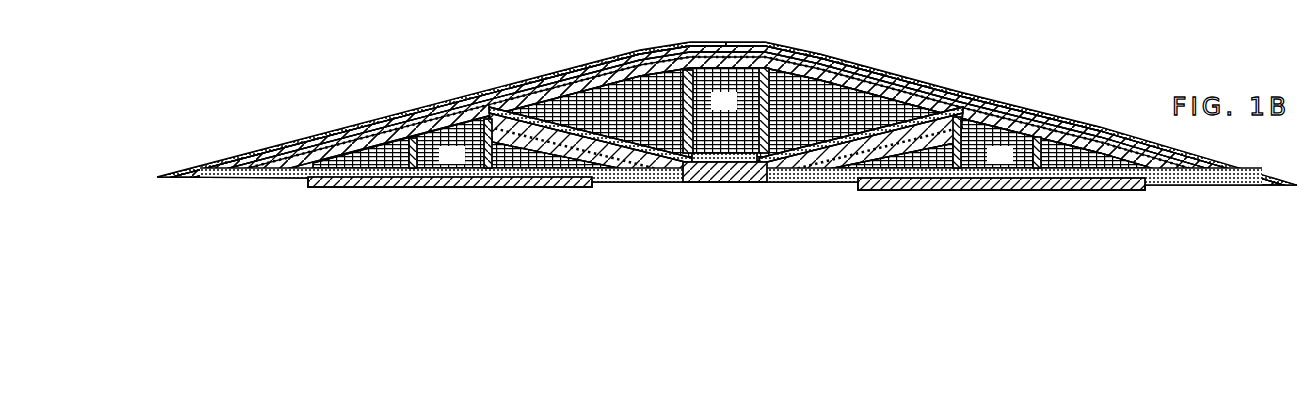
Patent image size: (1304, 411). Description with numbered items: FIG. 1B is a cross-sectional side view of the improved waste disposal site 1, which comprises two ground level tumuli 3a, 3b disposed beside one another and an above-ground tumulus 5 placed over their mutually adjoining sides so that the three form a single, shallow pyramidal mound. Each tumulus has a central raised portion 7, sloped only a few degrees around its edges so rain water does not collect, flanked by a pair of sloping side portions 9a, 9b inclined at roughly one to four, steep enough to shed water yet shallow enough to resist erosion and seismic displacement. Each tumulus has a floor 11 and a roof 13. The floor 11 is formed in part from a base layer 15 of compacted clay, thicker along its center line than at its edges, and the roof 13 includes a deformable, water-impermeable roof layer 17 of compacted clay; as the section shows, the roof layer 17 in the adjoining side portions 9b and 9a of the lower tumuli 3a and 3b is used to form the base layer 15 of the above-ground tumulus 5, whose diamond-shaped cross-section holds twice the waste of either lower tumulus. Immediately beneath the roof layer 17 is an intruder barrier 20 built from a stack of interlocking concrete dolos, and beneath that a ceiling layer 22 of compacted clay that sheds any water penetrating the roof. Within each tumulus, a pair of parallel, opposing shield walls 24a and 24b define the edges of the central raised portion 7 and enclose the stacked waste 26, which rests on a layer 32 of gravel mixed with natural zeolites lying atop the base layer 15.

The waste disposal site 1 is at (311, 80).
The ground level tumulus 3a is at (246, 148).
The ground level tumulus 3b is at (1085, 117).
The above-ground tumulus 5 is at (620, 55).
The central raised portion 7 is at (440, 108).
The sloping side portion 9a is at (268, 142).
The sloping side portion 9b is at (563, 129).
The floor 11 is at (336, 197).
The roof 13 is at (367, 117).
The base layer 15 is at (440, 188).
The roof layer 17 is at (525, 124).
The intruder barrier 20 is at (425, 108).
The ceiling layer 22 is at (330, 110).
The shield wall 24a is at (405, 188).
The shield wall 24b is at (488, 178).
The stacked waste 26 is at (443, 164).
The gravel and zeolite layer 32 is at (456, 187).